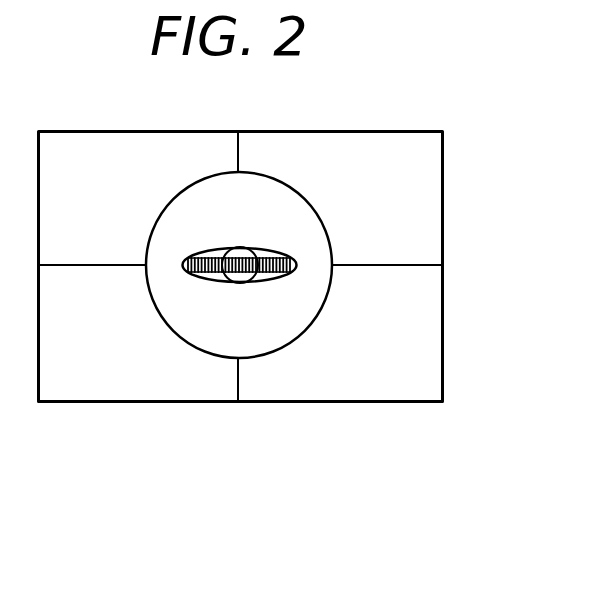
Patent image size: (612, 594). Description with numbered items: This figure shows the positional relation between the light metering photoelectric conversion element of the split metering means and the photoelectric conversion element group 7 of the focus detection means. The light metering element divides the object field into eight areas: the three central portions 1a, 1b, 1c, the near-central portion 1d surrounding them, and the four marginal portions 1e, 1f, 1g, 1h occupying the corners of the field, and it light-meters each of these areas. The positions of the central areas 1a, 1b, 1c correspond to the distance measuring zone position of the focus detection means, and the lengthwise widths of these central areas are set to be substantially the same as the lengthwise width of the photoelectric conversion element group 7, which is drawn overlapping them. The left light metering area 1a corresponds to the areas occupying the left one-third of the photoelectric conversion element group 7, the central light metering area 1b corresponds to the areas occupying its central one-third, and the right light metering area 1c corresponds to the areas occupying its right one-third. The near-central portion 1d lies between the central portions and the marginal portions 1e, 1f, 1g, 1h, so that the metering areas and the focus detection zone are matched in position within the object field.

The left central light metering area 1a is at (208, 278).
The central light metering area 1b is at (243, 279).
The right central light metering area 1c is at (270, 279).
The near-central portion 1d is at (202, 202).
The marginal portion 1e is at (73, 147).
The marginal portion 1f is at (428, 175).
The marginal portion 1g is at (63, 383).
The marginal portion 1h is at (415, 382).
The photoelectric conversion element group 7 is at (278, 252).